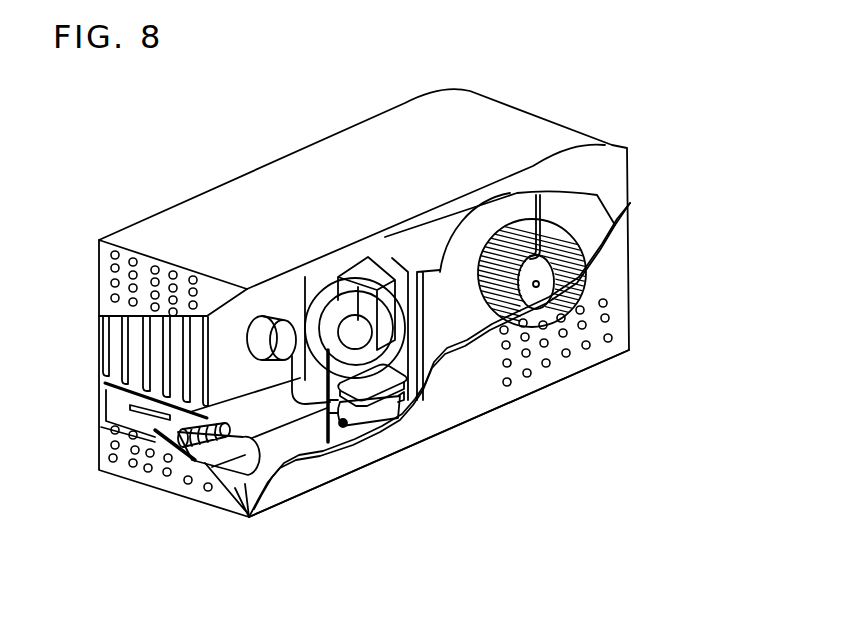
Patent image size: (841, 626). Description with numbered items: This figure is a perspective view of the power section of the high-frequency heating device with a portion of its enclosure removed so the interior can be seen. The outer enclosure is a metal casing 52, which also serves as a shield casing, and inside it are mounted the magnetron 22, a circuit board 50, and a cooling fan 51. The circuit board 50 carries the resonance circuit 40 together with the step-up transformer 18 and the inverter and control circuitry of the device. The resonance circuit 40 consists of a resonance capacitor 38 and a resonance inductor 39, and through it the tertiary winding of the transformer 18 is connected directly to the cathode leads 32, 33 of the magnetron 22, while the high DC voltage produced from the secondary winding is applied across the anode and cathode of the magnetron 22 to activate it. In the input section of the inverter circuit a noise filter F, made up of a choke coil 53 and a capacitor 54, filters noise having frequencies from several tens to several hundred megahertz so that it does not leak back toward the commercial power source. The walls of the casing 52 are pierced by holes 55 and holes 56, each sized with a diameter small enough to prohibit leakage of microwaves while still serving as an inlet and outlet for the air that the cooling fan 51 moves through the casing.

The transformer 18 is at (365, 262).
The magnetron 22 is at (155, 355).
The cathode lead 32 is at (272, 335).
The cathode lead 33 is at (287, 300).
The resonance capacitor 38 is at (357, 395).
The resonance inductor 39 is at (373, 413).
The resonance circuit 40 is at (413, 512).
The circuit board 50 is at (273, 417).
The cooling fan 51 is at (458, 323).
The metal casing 52 is at (417, 423).
The choke coil 53 is at (187, 440).
The capacitor 54 is at (215, 465).
The holes 55 is at (563, 333).
The holes 56 is at (128, 467).
The noise filter F is at (169, 566).